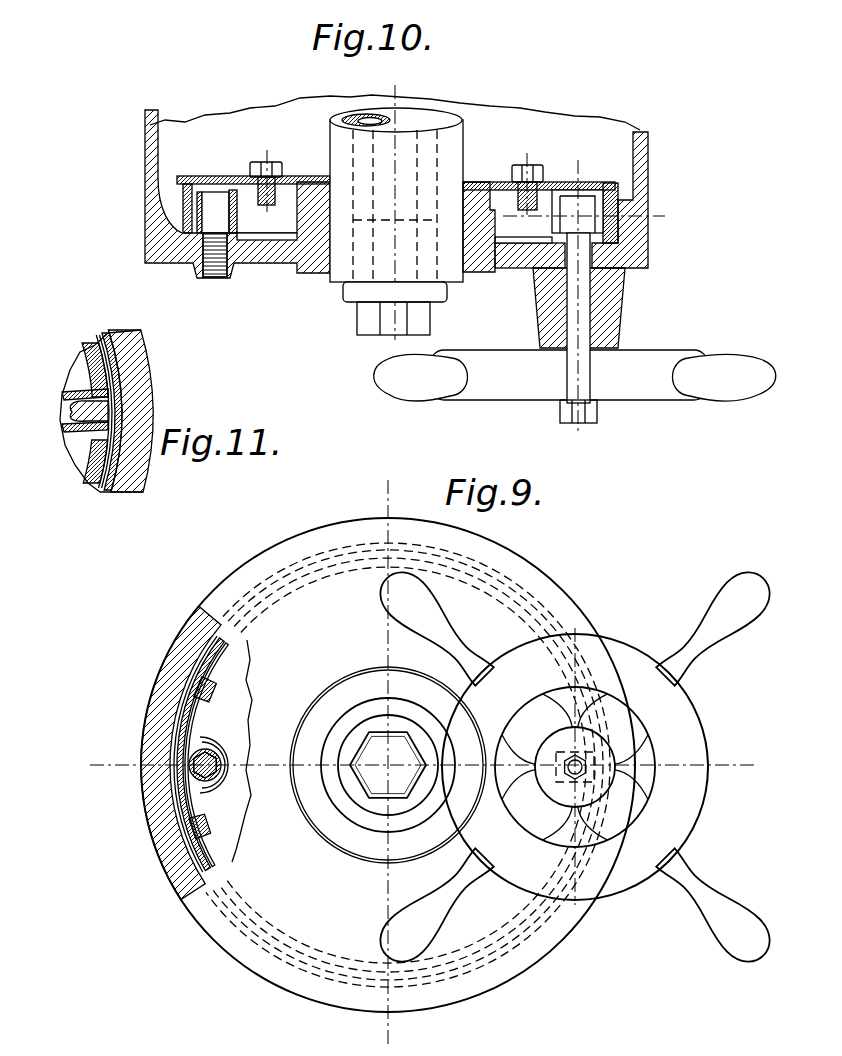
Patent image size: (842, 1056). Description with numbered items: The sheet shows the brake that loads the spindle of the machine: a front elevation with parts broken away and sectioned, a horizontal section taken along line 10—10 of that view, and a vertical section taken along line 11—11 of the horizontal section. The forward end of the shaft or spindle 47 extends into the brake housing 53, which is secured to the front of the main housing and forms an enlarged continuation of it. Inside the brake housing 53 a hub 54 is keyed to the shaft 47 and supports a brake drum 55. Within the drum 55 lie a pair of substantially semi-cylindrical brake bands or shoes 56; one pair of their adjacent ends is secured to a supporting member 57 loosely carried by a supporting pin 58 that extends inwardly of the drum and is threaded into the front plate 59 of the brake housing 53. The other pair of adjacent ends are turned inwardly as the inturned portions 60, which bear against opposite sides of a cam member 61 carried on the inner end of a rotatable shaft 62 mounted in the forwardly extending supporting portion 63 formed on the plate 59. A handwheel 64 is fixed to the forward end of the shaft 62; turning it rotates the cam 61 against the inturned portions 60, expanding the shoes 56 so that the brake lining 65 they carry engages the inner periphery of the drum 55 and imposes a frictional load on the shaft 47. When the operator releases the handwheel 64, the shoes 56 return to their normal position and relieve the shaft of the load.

In FIG. 10, the shaft or spindle 47 is at (446, 128).
In FIG. 10, the brake housing 53 is at (650, 156).
In FIG. 11, the brake housing 53 is at (140, 356).
In FIG. 9, the brake housing 53 is at (150, 805).
In FIG. 10, the hub 54 is at (472, 262).
In FIG. 10, the brake drum 55 is at (545, 183).
In FIG. 11, the brake drum 55 is at (133, 415).
In FIG. 9, the brake drum 55 is at (182, 845).
In FIG. 10, the brake bands or shoes 56 is at (186, 186).
In FIG. 11, the brake bands or shoes 56 is at (86, 352).
In FIG. 9, the brake bands or shoes 56 is at (210, 853).
In FIG. 10, the supporting member 57 is at (238, 214).
In FIG. 9, the supporting member 57 is at (207, 718).
In FIG. 10, the supporting pin 58 is at (218, 196).
In FIG. 10, the front plate 59 is at (244, 268).
In FIG. 11, the inturned portions 60 is at (84, 395).
In FIG. 10, the cam member 61 is at (586, 198).
In FIG. 11, the cam member 61 is at (70, 412).
In FIG. 10, the rotatable shaft 62 is at (582, 320).
In FIG. 10, the supporting portion 63 is at (612, 298).
In FIG. 10, the handwheel 64 is at (656, 358).
In FIG. 9, the handwheel 64 is at (705, 718).
In FIG. 11, the brake lining 65 is at (106, 490).
In FIG. 9, the brake lining 65 is at (232, 647).
In FIG. 9, the section line 10— 10 is at (421, 767).
In FIG. 10, the section line 11— 11 is at (594, 217).